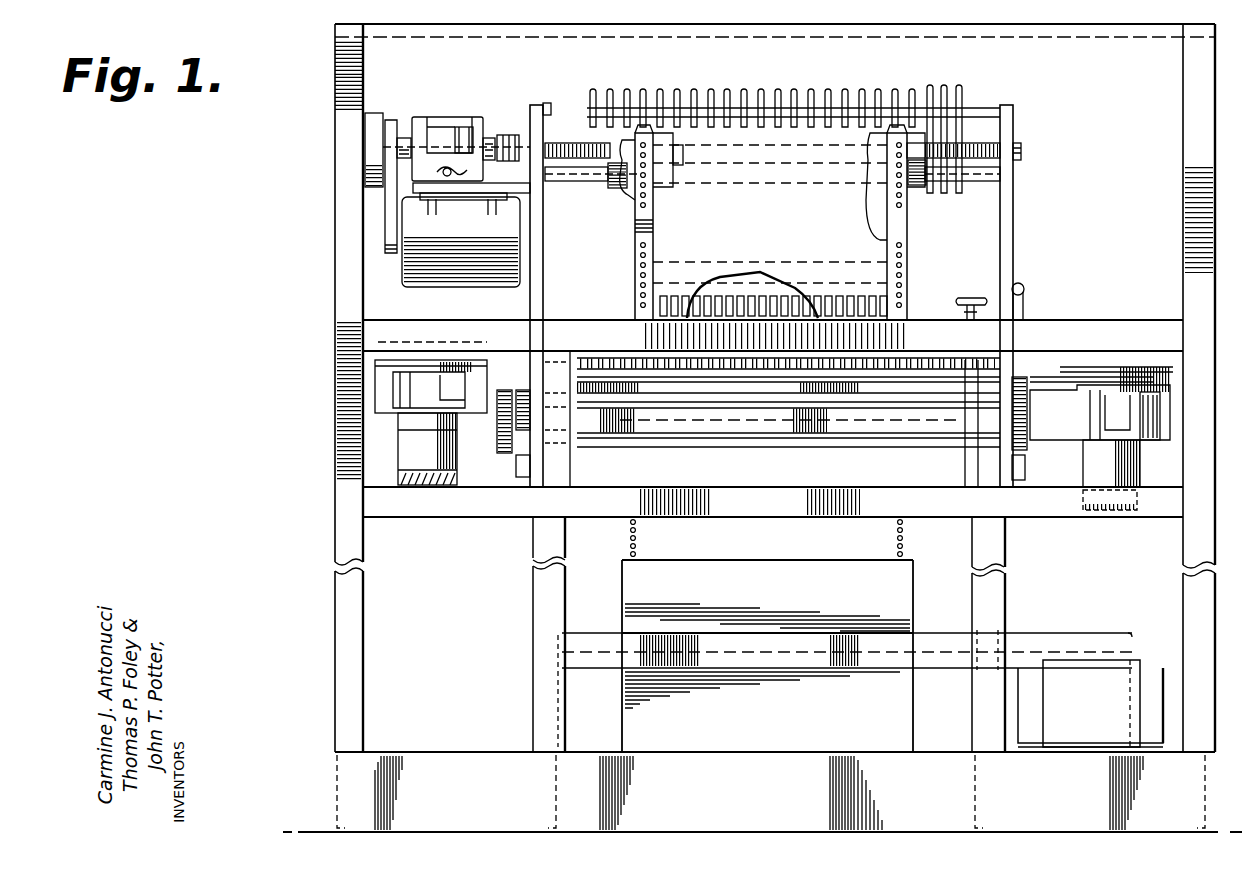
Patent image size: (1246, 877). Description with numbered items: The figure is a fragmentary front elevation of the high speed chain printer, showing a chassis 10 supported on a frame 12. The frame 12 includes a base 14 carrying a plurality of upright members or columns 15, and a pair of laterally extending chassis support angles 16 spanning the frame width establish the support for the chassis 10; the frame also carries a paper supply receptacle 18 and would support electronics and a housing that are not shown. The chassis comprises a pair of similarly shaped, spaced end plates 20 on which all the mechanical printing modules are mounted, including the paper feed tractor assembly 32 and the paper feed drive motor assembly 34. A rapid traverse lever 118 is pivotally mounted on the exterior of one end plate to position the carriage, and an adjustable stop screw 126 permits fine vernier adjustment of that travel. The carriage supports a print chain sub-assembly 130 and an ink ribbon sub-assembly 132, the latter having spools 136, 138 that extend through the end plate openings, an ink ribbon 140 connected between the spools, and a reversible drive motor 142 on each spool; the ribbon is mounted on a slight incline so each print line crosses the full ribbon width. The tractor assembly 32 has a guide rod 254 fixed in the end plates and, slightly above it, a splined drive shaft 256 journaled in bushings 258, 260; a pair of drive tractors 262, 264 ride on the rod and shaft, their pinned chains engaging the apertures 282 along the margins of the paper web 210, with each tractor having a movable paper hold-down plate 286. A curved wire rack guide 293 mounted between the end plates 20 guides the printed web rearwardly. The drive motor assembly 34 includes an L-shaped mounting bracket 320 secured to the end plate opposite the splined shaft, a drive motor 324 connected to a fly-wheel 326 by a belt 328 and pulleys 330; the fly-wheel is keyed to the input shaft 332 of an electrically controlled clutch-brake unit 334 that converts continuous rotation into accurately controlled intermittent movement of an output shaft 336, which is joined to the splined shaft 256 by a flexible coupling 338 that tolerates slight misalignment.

The chassis 10 is at (1017, 238).
The frame 12 is at (329, 585).
The base 14 is at (785, 803).
The upright members or columns 15 is at (363, 667).
The chassis support angles 16 is at (1032, 513).
The paper supply receptacle 18 is at (783, 600).
The end plates 20 is at (542, 108).
The paper feed tractor assembly 32 is at (930, 210).
The paper feed drive motor assembly 34 is at (443, 115).
The rapid traverse lever 118 is at (1025, 288).
The adjustable stop screw 126 is at (978, 298).
The print chain sub-assembly 130 is at (926, 344).
The ink ribbon sub-assembly 132 is at (1108, 357).
The spool 136 is at (390, 357).
The spool 138 is at (1137, 375).
The ink ribbon 140 is at (1043, 370).
The reversible drive motor 142 is at (438, 455).
The paper web 210 is at (785, 250).
The guide rod 254 is at (573, 178).
The splined drive shaft 256 is at (583, 150).
The bushing 258 is at (548, 147).
The bushing 260 is at (1020, 150).
The drive tractor 262 is at (628, 200).
The drive tractor 264 is at (873, 222).
The apertures 282 is at (653, 258).
The paper hold-down plate 286 is at (653, 225).
The curved wire rack guide 293 is at (959, 85).
The L-shaped mounting bracket 320 is at (530, 104).
The drive motor 324 is at (452, 265).
The fly-wheel 326 is at (373, 112).
The belt 328 is at (390, 206).
The pulleys 330 is at (392, 120).
The input shaft 332 is at (405, 138).
The clutch-brake unit 334 is at (465, 127).
The output shaft 336 is at (495, 135).
The flexible coupling 338 is at (512, 140).